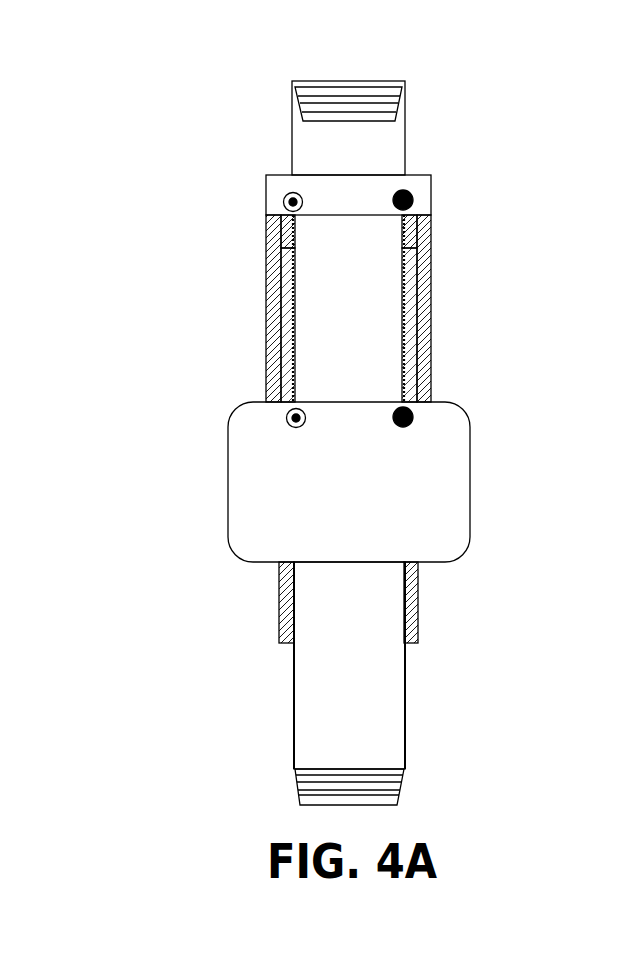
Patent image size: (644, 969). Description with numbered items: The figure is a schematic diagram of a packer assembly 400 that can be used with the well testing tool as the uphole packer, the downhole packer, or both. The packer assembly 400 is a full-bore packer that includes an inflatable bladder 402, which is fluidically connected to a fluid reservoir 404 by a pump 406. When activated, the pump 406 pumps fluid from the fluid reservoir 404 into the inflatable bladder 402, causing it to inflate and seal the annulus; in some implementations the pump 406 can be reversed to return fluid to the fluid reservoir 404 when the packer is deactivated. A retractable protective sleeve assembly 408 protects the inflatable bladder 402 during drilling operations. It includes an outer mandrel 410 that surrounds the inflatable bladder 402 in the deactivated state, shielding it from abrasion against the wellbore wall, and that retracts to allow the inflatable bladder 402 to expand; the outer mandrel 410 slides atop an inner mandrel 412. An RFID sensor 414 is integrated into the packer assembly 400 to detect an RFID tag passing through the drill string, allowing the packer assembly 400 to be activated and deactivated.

The packer assembly 400 is at (202, 105).
The inflatable bladder 402 is at (370, 498).
The fluid reservoir 404 is at (431, 203).
The pump 406 is at (404, 193).
The retractable protective sleeve assembly 408 is at (148, 351).
The outer mandrel 410 is at (431, 345).
The inner mandrel 412 is at (417, 372).
The RFID sensor 414 is at (420, 246).